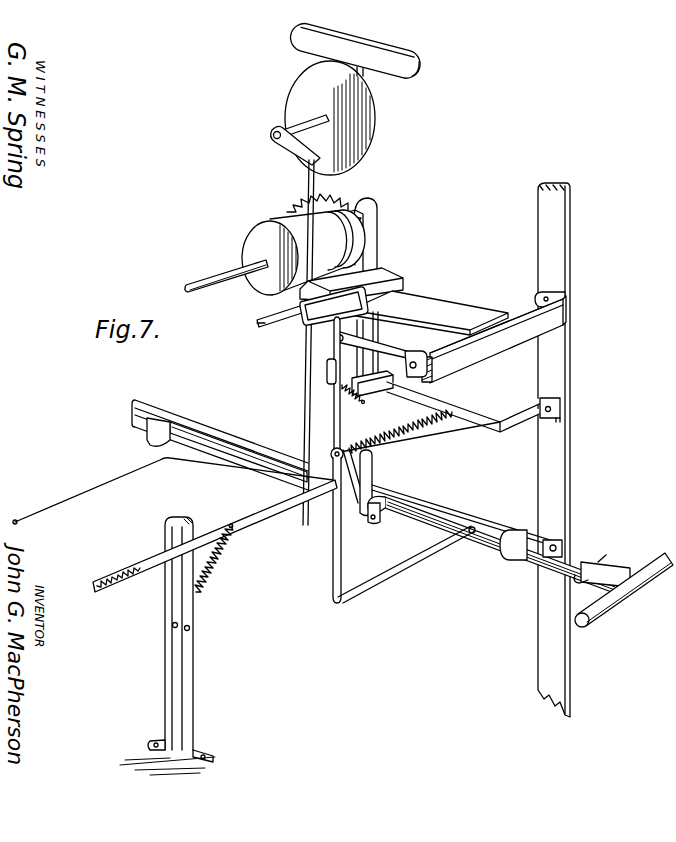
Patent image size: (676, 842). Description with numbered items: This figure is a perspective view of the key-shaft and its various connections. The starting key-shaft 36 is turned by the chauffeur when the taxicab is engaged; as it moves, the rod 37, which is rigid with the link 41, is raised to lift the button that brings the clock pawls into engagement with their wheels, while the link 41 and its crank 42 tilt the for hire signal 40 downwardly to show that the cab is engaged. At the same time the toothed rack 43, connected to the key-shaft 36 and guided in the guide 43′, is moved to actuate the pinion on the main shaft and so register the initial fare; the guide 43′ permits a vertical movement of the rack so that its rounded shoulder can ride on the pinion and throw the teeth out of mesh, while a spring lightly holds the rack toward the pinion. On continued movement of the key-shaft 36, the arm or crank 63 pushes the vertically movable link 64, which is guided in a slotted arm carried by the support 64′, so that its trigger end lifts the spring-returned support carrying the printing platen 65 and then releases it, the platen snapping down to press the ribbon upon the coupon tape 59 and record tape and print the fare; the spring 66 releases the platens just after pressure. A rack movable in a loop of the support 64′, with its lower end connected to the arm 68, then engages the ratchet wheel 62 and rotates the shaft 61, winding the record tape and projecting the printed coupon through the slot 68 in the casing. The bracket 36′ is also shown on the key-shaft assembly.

The for hire signal 40 is at (414, 76).
The crank 42 is at (287, 146).
The link 41 is at (308, 180).
The ratchet wheel 62 is at (344, 207).
The shaft 61 is at (216, 283).
The printing platen 65 is at (386, 283).
The coupon tape 59 is at (423, 301).
The spring 66 is at (413, 358).
The support 64′ is at (510, 426).
The vertically movable link 64 is at (335, 532).
The rod 37 is at (233, 487).
The guide 43′ is at (167, 637).
The toothed rack 43 is at (264, 512).
The bracket 36′ is at (372, 484).
The starting key-shaft 36 is at (425, 510).
The arm 68 is at (371, 525).
The arm or crank 63 is at (428, 564).